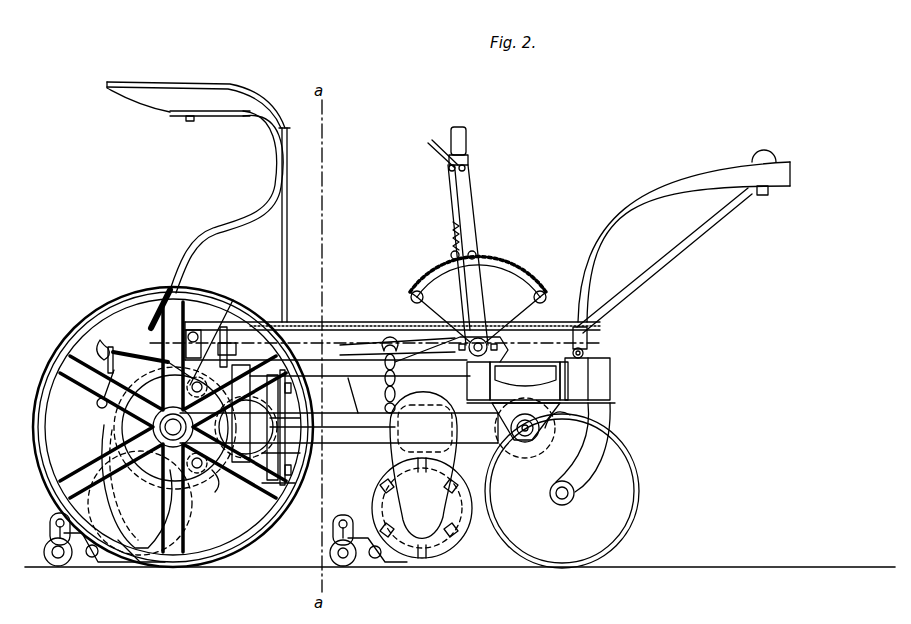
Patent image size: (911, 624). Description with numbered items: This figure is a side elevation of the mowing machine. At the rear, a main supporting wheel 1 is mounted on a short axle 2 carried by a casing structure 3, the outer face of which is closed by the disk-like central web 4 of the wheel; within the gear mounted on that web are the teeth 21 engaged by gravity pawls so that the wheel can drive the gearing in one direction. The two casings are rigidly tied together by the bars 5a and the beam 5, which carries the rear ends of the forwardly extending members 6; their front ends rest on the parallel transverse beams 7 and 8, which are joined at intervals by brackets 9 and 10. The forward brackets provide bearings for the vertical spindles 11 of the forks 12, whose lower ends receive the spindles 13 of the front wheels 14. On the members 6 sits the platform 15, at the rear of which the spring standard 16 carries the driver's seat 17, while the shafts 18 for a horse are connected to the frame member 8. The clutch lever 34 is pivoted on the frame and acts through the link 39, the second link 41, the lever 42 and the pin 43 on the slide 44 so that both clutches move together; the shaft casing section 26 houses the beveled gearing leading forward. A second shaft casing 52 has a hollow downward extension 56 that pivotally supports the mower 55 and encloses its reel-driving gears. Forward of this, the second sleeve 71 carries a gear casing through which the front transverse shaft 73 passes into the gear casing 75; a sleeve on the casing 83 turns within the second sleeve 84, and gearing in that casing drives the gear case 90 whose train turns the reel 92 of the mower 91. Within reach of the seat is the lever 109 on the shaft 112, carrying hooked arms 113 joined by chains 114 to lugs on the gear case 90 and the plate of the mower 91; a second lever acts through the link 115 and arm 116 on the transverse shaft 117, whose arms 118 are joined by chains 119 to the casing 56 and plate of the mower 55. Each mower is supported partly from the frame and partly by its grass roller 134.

The main supporting wheels 1 is at (262, 540).
The short axles 2 is at (173, 414).
The casing structures 3 is at (217, 487).
The disk-like central webs 4 is at (150, 382).
The beam 5 is at (244, 372).
The bars 5a is at (208, 513).
The forwardly extending members 6 is at (350, 361).
The transverse beam 7 is at (468, 380).
The transverse beam 8 is at (585, 382).
The brackets 9 is at (525, 381).
The brackets 10 is at (550, 428).
The vertical spindles 11 is at (598, 358).
The forks 12 is at (604, 422).
The spindles 13 is at (564, 504).
The wheels 14 is at (630, 500).
The platform 15 is at (352, 320).
The spring standard 16 is at (248, 214).
The driver's seat 17 is at (168, 103).
The shafts 18 is at (694, 172).
The teeth 21 is at (262, 455).
The shaft casing section 26 is at (222, 473).
The lever 34 is at (287, 238).
The link 39 is at (292, 394).
The second link 41 is at (290, 483).
The lever 42 is at (305, 455).
The pin 43 is at (305, 428).
The slide 44 is at (286, 418).
The second shaft casing 52 is at (96, 401).
The mower 55 is at (122, 553).
The downward extension 56 is at (110, 434).
The second sleeve 71 is at (358, 410).
The front transverse shaft 73 is at (522, 442).
The gear casing 75 is at (542, 440).
The casing 83 is at (446, 462).
The second sleeve 84 is at (339, 431).
The gear case 90 is at (393, 432).
The mower 91 is at (456, 546).
The reel 92 is at (376, 500).
The lever 109 is at (466, 150).
The shaft 112 is at (498, 348).
The hooked arms 113 is at (412, 345).
The chains 114 is at (396, 378).
The link 115 is at (298, 326).
The arm 116 is at (200, 348).
The transverse shaft 117 is at (223, 333).
The arms 118 is at (134, 350).
The chains 119 is at (95, 355).
The grass rollers 134 is at (60, 565).